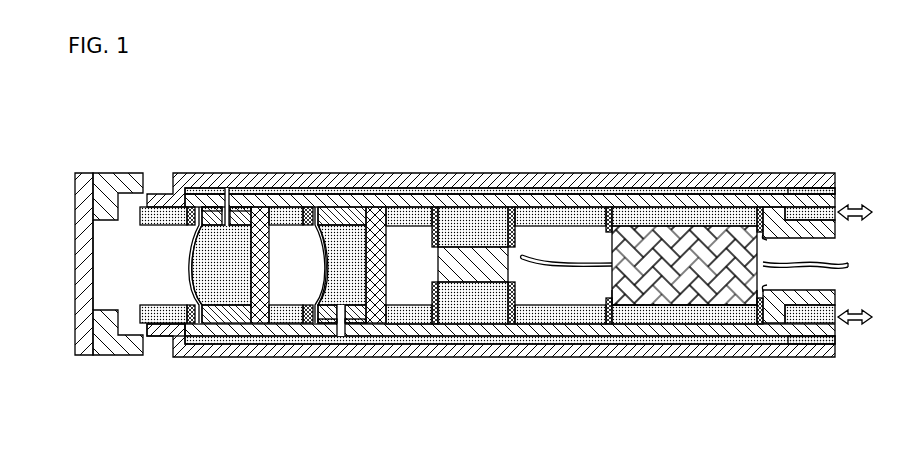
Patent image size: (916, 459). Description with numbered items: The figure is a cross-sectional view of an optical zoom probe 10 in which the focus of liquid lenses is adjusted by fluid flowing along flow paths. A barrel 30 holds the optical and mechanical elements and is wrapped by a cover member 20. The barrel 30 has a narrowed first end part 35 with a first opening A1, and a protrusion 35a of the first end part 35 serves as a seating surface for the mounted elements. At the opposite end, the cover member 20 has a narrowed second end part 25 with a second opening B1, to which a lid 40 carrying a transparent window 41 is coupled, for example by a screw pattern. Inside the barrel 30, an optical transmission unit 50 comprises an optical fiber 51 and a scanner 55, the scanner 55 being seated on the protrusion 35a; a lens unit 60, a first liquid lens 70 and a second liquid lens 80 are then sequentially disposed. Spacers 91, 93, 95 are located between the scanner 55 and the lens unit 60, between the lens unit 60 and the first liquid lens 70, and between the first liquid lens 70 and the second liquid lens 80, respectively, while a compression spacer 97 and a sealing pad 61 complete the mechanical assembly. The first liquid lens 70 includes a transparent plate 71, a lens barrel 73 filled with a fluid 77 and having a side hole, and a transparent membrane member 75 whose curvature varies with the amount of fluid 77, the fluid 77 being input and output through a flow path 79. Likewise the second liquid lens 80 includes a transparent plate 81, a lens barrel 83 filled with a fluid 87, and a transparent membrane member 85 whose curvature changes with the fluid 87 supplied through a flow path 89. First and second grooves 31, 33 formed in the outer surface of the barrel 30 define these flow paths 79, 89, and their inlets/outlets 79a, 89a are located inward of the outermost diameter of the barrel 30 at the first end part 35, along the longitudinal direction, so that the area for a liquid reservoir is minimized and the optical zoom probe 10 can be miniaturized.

The optical zoom probe 10 is at (470, 134).
The cover member 20 is at (713, 180).
The second end part 25 is at (153, 331).
The barrel 30 is at (582, 200).
The first groove 31 is at (663, 332).
The second groove 33 is at (548, 194).
The first end part 35 is at (835, 231).
The protrusion 35a is at (767, 240).
The lid 40 is at (101, 162).
The transparent window 41 is at (81, 268).
The optical transmission unit 50 is at (662, 248).
The optical fiber 51 is at (565, 263).
The scanner 55 is at (728, 300).
The lens unit 60 is at (491, 250).
The sealing pad 61 is at (192, 190).
The first liquid lens 70 is at (352, 232).
The transparent plate 71 is at (380, 305).
The lens barrel 73 is at (339, 328).
The transparent membrane member 75 is at (317, 265).
The fluid 77 is at (342, 265).
The flow path 79 is at (638, 340).
The inlet/outlet 79a is at (835, 312).
The second liquid lens 80 is at (227, 238).
The transparent plate 81 is at (263, 300).
The lens barrel 83 is at (238, 313).
The transparent membrane member 85 is at (184, 301).
The fluid 87 is at (221, 256).
The flow path 89 is at (527, 190).
The inlet/outlet 89a is at (830, 212).
The spacer 91 is at (597, 320).
The spacer 93 is at (427, 318).
The spacer 95 is at (282, 212).
The compression spacer 97 is at (155, 214).
The second opening B1 is at (141, 266).
The first opening A1 is at (817, 253).